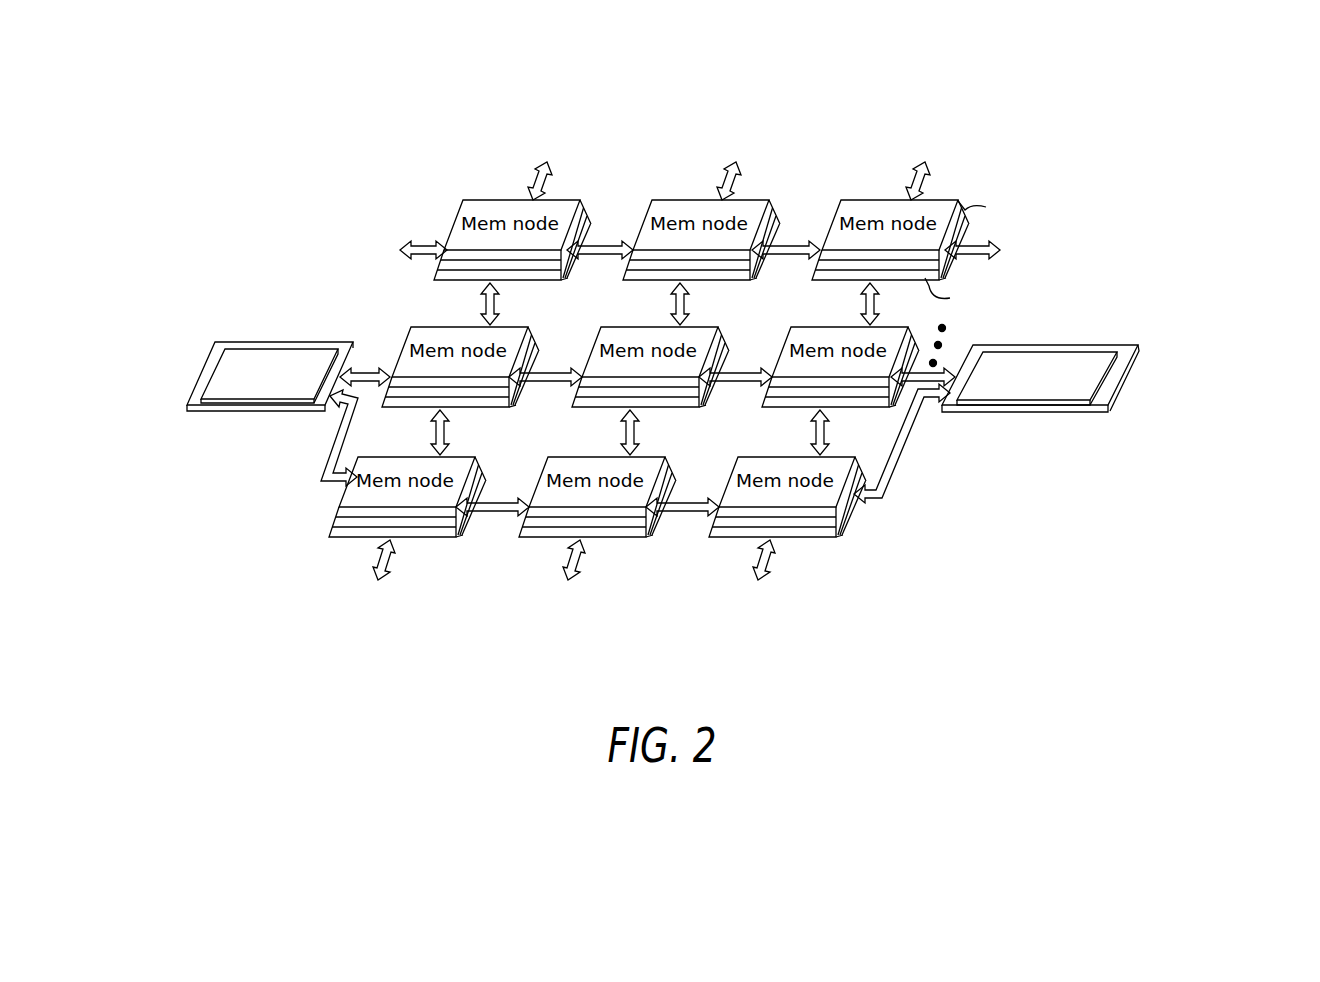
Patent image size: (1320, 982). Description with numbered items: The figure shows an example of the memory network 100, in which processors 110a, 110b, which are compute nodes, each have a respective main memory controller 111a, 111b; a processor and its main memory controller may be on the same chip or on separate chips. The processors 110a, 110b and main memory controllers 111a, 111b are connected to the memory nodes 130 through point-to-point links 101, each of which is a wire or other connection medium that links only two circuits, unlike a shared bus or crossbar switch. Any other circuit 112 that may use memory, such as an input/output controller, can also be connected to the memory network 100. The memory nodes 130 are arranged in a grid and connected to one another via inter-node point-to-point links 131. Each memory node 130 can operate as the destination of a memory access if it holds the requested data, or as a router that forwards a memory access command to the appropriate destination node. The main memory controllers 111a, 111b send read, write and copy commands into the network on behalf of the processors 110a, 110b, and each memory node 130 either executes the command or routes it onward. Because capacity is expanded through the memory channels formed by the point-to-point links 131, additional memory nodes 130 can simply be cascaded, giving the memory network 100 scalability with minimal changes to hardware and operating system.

The memory network 100 is at (708, 306).
The memory node 130 is at (511, 200).
The inter-node point-to-point link 131 is at (660, 302).
The circuit that may use memory 112 is at (285, 226).
The processor 110a is at (247, 389).
The processor 110b is at (1066, 413).
The main memory controller 111a is at (308, 395).
The main memory controller 111b is at (963, 392).
The point-to-point link 101 is at (310, 458).